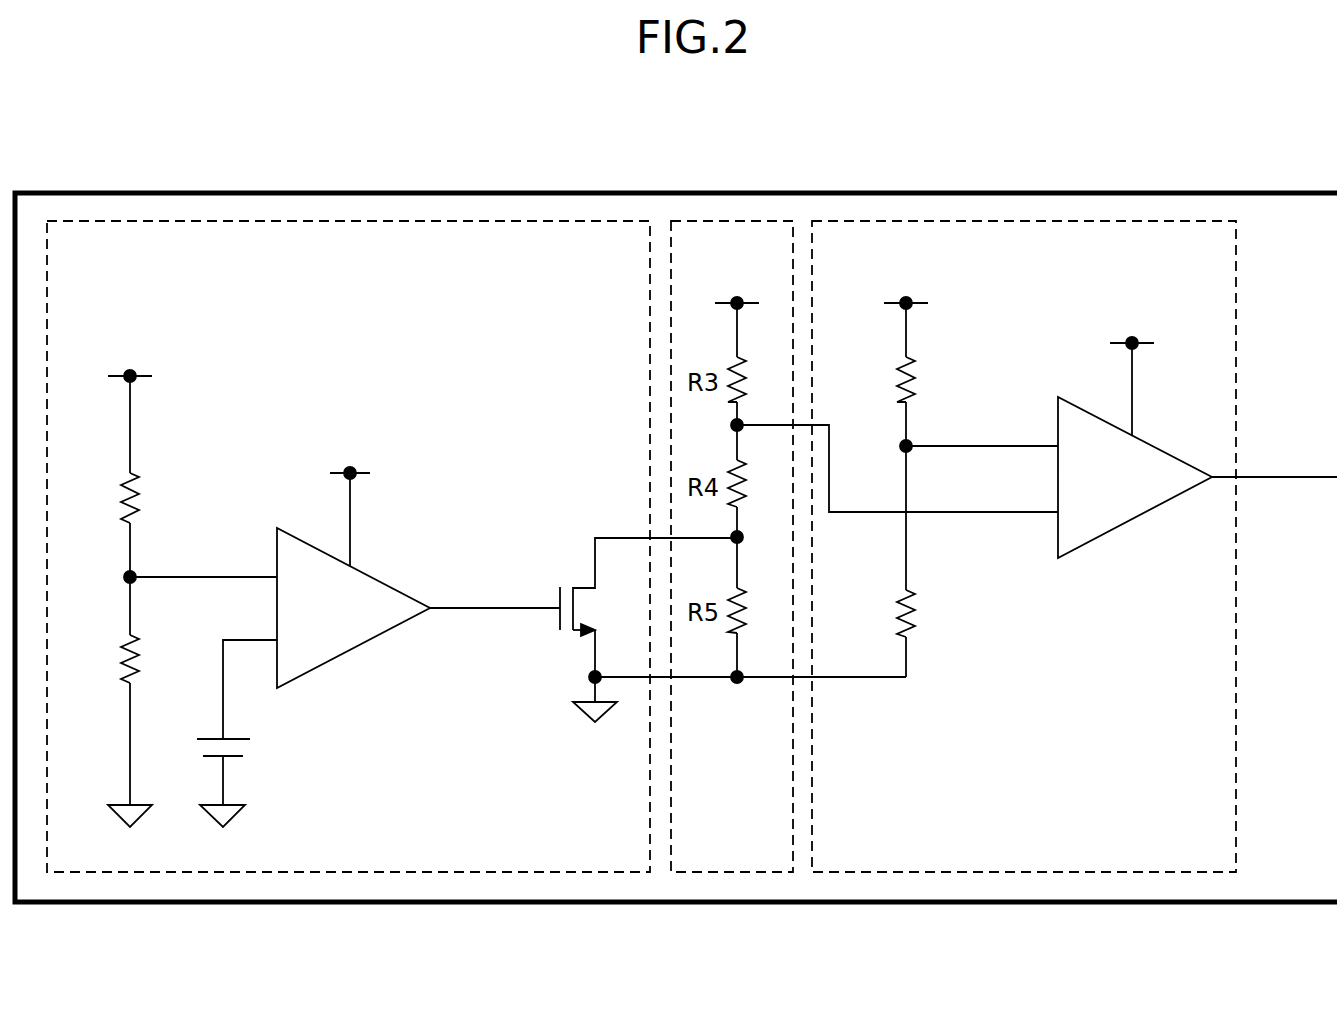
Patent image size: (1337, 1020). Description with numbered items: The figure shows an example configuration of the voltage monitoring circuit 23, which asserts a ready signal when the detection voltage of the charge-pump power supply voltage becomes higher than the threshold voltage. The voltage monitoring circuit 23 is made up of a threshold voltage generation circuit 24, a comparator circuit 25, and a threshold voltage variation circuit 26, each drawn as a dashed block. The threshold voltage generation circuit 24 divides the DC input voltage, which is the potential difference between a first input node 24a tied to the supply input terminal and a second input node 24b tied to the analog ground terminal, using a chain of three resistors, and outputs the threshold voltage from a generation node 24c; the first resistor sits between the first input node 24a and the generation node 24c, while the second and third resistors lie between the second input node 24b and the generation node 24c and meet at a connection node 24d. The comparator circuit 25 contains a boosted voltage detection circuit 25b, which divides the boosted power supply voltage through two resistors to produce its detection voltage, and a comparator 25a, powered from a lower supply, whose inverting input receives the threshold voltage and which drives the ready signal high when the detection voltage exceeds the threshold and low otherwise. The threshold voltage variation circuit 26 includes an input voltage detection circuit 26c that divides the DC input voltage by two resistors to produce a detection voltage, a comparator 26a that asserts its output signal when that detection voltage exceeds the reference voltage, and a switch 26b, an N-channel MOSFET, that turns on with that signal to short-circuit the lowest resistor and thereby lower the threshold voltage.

The voltage monitoring circuit 23 is at (1297, 192).
The threshold voltage generation circuit 24 is at (733, 220).
The comparator circuit 25 is at (1010, 220).
The threshold voltage variation circuit 26 is at (348, 220).
The first input node 24a is at (732, 307).
The second input node 24b is at (732, 680).
The generation node 24c is at (732, 426).
The connection node 24d is at (732, 540).
The comparator 25a is at (1158, 447).
The boosted voltage detection circuit 25b is at (935, 370).
The comparator 26a is at (385, 583).
The switch 26b is at (558, 633).
The input voltage detection circuit 26c is at (158, 466).